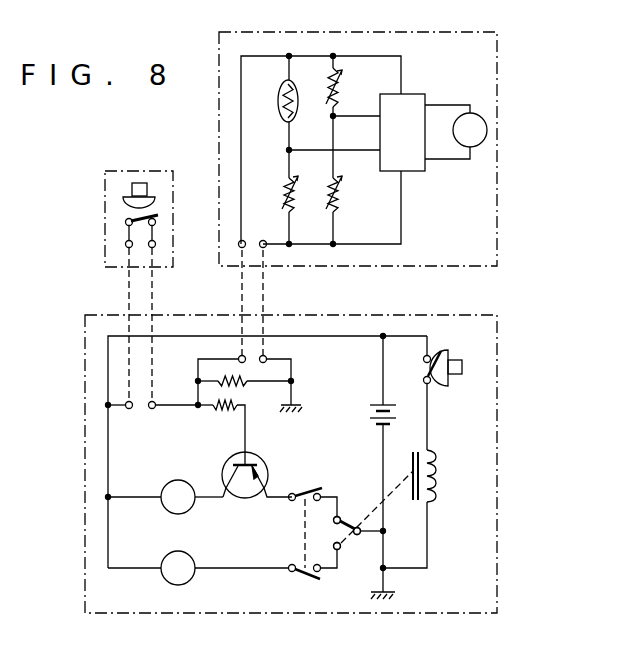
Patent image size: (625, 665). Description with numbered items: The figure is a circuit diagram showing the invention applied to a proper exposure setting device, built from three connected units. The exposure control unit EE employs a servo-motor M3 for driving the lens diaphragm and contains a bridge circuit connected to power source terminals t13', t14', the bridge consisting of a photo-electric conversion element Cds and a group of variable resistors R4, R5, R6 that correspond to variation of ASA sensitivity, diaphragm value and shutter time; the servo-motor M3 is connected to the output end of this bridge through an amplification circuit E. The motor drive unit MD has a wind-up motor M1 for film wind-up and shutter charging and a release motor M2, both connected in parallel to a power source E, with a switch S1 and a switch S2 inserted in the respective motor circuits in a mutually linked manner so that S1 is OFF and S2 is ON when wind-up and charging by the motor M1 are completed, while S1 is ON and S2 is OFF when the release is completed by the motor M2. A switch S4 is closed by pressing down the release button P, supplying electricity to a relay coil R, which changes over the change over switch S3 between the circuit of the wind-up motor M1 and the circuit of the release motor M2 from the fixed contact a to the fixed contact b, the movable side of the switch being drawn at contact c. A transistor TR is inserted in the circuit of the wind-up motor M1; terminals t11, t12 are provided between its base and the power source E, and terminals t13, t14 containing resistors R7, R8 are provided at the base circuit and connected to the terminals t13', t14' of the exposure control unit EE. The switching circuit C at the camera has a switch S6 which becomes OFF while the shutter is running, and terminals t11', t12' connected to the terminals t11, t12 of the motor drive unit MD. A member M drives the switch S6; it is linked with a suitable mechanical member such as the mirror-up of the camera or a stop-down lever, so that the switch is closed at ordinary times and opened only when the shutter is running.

The exposure control unit EE is at (497, 112).
The motor drive unit MD is at (497, 365).
The switching circuit C is at (120, 171).
The member M is at (150, 192).
The switch S6 is at (158, 215).
The terminal t11' is at (111, 321).
The terminal t12' is at (181, 321).
The power source terminal t13' is at (268, 277).
The power source terminal t14' is at (289, 298).
The terminal t11 is at (131, 419).
The terminal t12 is at (174, 419).
The terminal t13 is at (224, 368).
The terminal t14 is at (283, 371).
The photo-electric conversion element Cds is at (270, 103).
The variable resistor R4 is at (350, 198).
The variable resistor R5 is at (306, 198).
The variable resistor R6 is at (353, 102).
The resistor R7 is at (221, 432).
The resistor R8 is at (245, 393).
The amplification circuit / power source E is at (391, 343).
The servo-motor M3 is at (470, 112).
The wind-up motor M1 is at (165, 483).
The release motor M2 is at (198, 556).
The transistor TR is at (259, 463).
The switch S1 is at (313, 513).
The switch S2 is at (313, 579).
The change over switch S3 is at (374, 510).
The switch S4 is at (417, 393).
The fixed contact a is at (327, 513).
The fixed contact b is at (327, 543).
The switch common contact c is at (362, 545).
The release button P is at (450, 358).
The relay coil R is at (418, 509).